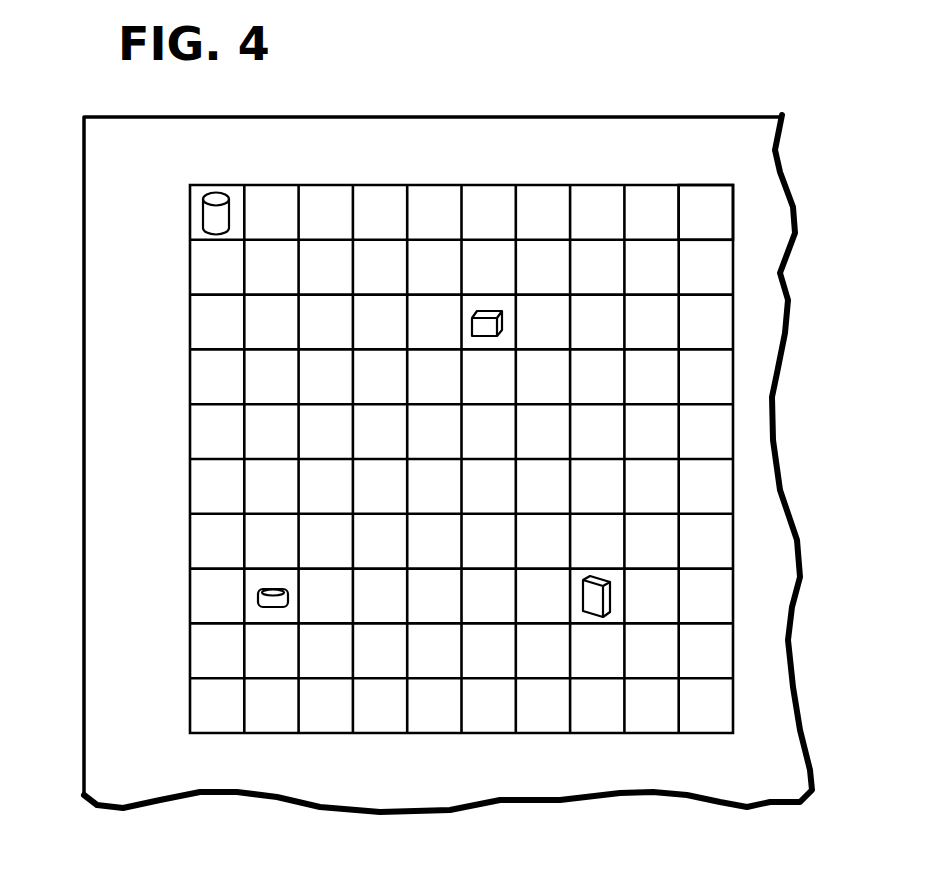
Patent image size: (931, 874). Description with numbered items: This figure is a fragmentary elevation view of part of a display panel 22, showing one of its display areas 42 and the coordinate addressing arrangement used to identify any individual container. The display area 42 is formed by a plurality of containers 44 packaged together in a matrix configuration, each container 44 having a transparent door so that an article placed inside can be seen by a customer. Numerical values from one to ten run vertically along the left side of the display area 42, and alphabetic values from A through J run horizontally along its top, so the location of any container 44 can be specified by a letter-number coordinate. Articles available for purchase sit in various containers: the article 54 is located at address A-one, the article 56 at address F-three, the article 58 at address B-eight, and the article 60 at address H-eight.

The display panel 22 is at (82, 197).
The display area 42 is at (737, 385).
The container 44 is at (718, 212).
The article 54 is at (198, 207).
The article 56 is at (493, 313).
The article 58 is at (258, 598).
The article 60 is at (605, 598).